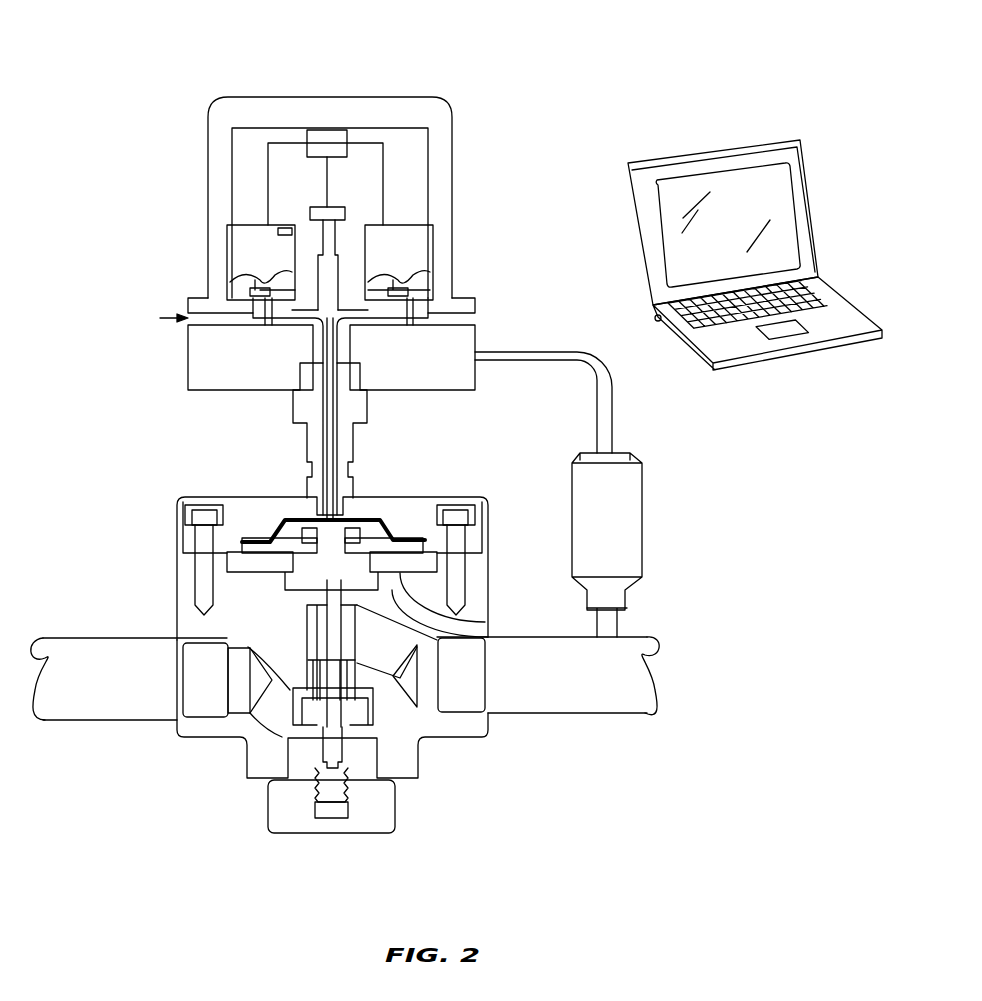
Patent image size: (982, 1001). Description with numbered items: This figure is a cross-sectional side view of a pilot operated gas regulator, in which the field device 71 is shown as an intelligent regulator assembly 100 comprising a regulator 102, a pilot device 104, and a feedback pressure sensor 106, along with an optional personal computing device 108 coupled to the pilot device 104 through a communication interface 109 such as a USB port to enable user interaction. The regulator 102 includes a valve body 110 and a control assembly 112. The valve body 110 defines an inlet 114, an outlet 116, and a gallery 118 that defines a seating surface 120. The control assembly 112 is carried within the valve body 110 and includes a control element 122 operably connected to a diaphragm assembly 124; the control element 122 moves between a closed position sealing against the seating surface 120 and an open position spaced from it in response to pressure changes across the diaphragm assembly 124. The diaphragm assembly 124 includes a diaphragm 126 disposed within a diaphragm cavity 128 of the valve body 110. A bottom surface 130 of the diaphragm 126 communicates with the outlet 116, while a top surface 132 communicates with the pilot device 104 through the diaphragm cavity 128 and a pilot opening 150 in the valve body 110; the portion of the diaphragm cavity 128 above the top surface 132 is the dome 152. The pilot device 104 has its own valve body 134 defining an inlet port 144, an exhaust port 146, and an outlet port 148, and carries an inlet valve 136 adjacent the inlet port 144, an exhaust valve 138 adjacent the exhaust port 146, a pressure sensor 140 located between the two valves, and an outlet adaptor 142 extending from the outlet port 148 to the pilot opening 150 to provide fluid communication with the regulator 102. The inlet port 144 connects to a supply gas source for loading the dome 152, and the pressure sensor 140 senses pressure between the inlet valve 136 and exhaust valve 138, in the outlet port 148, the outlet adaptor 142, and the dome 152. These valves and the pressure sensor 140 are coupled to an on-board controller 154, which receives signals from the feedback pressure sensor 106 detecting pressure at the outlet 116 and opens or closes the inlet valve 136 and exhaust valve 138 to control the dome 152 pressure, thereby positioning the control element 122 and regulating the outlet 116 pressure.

The field device 71 is at (480, 68).
The intelligent regulator assembly 100 is at (322, 266).
The regulator 102 is at (224, 766).
The pilot device 104 is at (226, 93).
The feedback pressure sensor 106 is at (652, 485).
The personal computing device 108 is at (772, 108).
The communication interface 109 is at (655, 322).
The valve body 110 is at (430, 742).
The control assembly 112 is at (312, 622).
The inlet 114 is at (190, 715).
The outlet 116 is at (490, 714).
The gallery 118 is at (373, 690).
The seating surface 120 is at (332, 655).
The control element 122 is at (300, 675).
The diaphragm assembly 124 is at (248, 543).
The diaphragm 126 is at (232, 497).
The diaphragm cavity 128 is at (445, 613).
The bottom surface 130 is at (413, 575).
The top surface 132 is at (408, 540).
The valve body 134 is at (178, 360).
The inlet valve 136 is at (252, 238).
The exhaust valve 138 is at (412, 223).
The pressure sensor 140 is at (334, 233).
The outlet adaptor 142 is at (300, 407).
The inlet port 144 is at (178, 306).
The exhaust port 146 is at (476, 310).
The outlet port 148 is at (353, 362).
The pilot opening 150 is at (350, 492).
The dome 152 is at (307, 517).
The on-board controller 154 is at (327, 140).